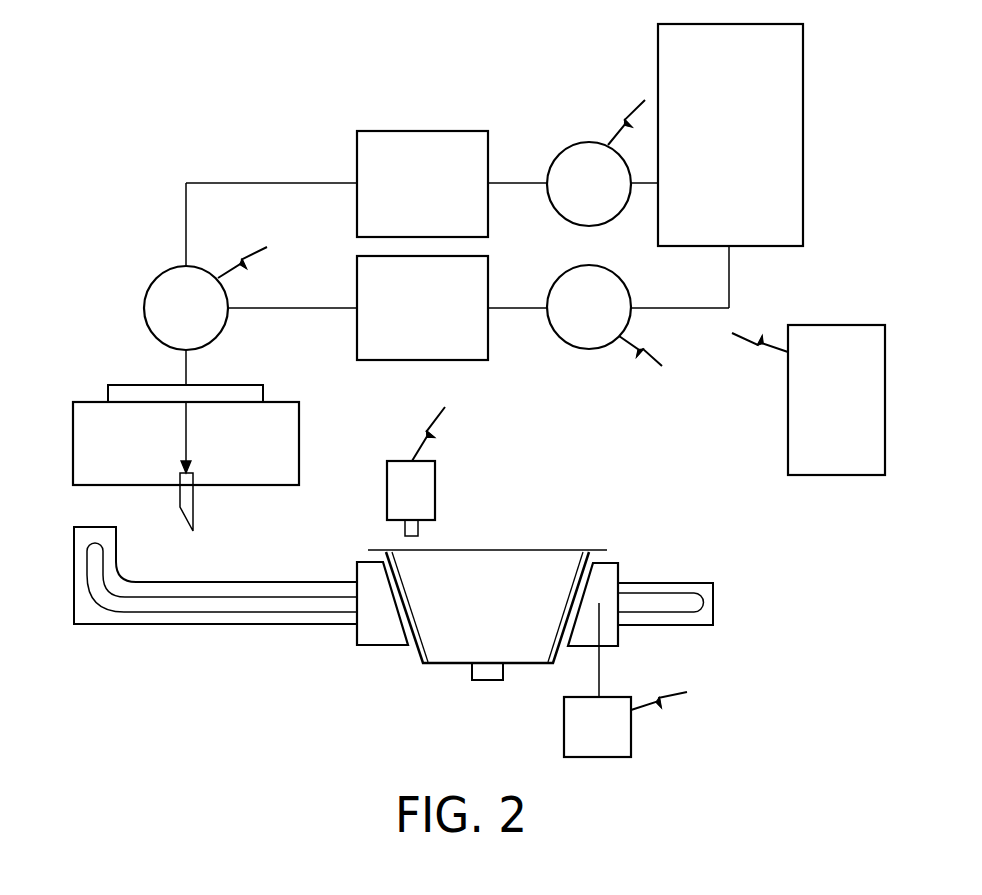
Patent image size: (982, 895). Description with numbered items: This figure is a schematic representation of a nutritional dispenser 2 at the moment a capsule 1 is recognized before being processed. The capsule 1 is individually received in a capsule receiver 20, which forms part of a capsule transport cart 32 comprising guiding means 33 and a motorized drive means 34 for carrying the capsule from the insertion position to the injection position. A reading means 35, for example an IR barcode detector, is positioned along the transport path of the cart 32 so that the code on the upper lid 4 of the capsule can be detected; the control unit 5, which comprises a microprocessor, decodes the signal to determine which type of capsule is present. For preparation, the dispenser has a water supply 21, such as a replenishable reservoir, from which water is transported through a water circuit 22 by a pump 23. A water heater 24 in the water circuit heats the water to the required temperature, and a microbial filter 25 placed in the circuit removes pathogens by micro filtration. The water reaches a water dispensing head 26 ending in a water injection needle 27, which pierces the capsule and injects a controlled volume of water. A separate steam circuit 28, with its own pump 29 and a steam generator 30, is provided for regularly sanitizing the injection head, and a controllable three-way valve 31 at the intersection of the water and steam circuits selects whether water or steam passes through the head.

The capsule 1 is at (583, 540).
The nutritional dispenser 2 is at (140, 176).
The upper lid 4 is at (529, 549).
The control unit 5 is at (804, 486).
The capsule receiver 20 is at (369, 660).
The water supply 21 is at (803, 35).
The water circuit 22 is at (335, 130).
The pump 23 is at (588, 142).
The water heater 24 is at (463, 131).
The microbial filter 25 is at (108, 390).
The water dispensing head 26 is at (300, 411).
The water injection needle 27 is at (195, 515).
The steam circuit 28 is at (514, 368).
The pump 29 is at (588, 349).
The steam generator 30 is at (463, 360).
The three-way valve 31 is at (143, 305).
The capsule transport cart 32 is at (709, 642).
The guiding means 33 is at (186, 625).
The motorized drive means 34 is at (607, 757).
The reading means 35 is at (436, 473).